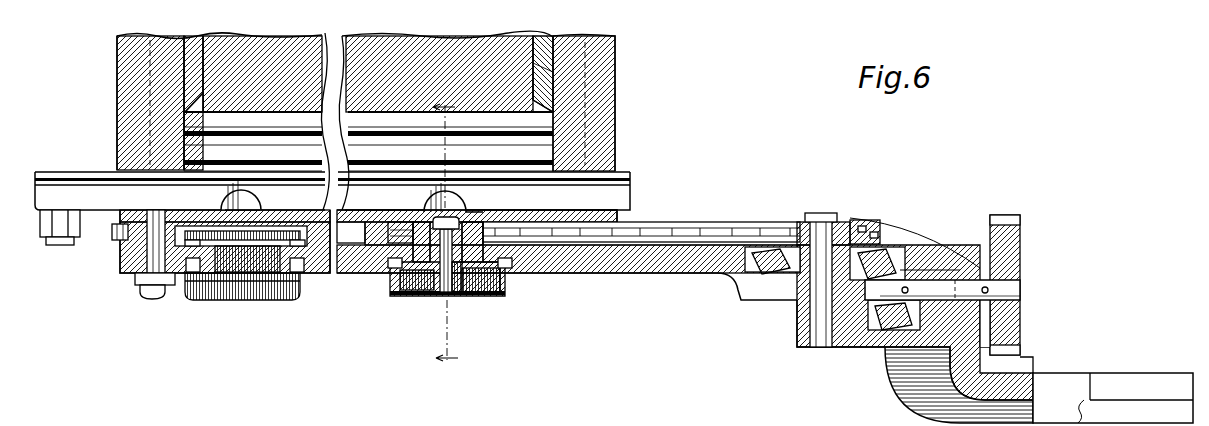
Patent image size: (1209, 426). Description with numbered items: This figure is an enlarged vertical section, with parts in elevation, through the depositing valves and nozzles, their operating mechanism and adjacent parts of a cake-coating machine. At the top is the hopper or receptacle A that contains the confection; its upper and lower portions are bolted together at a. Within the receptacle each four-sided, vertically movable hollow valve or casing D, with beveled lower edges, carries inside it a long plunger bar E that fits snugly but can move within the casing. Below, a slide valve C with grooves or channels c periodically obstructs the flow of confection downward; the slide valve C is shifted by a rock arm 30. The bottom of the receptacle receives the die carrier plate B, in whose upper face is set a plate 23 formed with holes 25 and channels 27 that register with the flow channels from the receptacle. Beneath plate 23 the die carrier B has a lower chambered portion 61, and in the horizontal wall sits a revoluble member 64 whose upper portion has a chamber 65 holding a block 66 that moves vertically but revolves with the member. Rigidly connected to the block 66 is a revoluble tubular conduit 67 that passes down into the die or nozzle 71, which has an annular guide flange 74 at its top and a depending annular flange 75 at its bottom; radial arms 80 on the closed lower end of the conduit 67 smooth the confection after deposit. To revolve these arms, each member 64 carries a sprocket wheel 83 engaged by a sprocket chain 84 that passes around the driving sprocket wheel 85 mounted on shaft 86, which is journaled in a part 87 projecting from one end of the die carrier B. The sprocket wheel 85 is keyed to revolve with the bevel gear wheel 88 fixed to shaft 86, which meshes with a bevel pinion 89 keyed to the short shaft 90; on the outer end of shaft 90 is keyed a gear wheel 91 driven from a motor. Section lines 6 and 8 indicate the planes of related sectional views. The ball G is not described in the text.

The hopper or receptacle A is at (616, 98).
The die carrier plate B is at (560, 276).
The slide valve C is at (83, 180).
The hollow valve or casing D is at (545, 70).
The plunger bar E is at (500, 56).
The ball G is at (258, 207).
The grooves or channels c is at (462, 195).
The section line 6 is at (444, 146).
The section line 8 is at (447, 342).
The plate 23 is at (600, 214).
The holes 25 is at (470, 212).
The channels 27 is at (258, 213).
The rock arm 30 is at (76, 240).
The lower chambered portion 61 is at (507, 270).
The revoluble member 64 is at (232, 249).
The chamber 65 is at (422, 216).
The block 66 is at (408, 274).
The revoluble tubular conduit 67 is at (445, 292).
The die or nozzle 71 is at (238, 286).
The annular guide flange 74 is at (508, 279).
The depending annular flange 75 is at (505, 286).
The radial arms 80 is at (462, 282).
The sprocket wheel 83 is at (194, 240).
The sprocket chain 84 is at (690, 226).
The driving sprocket wheel 85 is at (122, 256).
The shaft 86 is at (828, 215).
The projecting part 87 is at (736, 301).
The bevel gear wheel 88 is at (890, 256).
The bevel pinion 89 is at (925, 258).
The short shaft 90 is at (1022, 286).
The gear wheel 91 is at (1022, 332).
The bolts a is at (120, 257).